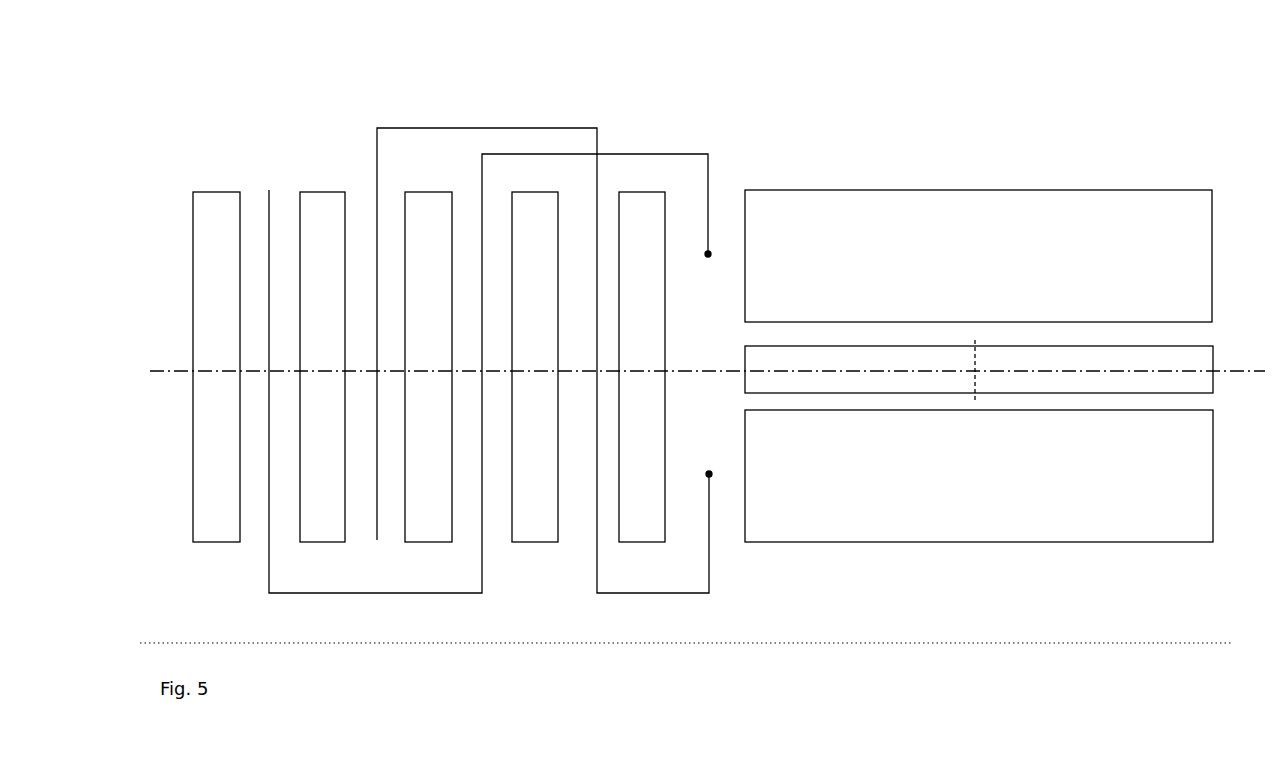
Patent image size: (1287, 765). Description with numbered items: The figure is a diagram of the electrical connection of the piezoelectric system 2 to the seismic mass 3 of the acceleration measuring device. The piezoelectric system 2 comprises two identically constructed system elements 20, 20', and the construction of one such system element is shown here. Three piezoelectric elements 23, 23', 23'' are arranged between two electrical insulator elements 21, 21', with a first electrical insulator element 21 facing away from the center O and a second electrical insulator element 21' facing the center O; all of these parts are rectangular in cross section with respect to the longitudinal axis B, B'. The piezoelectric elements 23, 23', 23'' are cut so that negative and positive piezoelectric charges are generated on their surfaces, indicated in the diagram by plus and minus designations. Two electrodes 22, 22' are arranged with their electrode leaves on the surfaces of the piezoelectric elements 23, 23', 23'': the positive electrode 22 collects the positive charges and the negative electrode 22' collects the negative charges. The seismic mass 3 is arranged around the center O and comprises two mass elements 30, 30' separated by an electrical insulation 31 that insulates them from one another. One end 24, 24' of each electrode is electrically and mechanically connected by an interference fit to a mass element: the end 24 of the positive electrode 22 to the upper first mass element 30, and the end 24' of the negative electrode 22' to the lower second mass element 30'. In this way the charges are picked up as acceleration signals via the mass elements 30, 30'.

The piezoelectric system 2 is at (302, 78).
The system element 20 is at (474, 319).
The system element 20' is at (474, 319).
The electrical insulator element 21 is at (216, 367).
The electrical insulator element 21' is at (642, 367).
The electrode 22 is at (543, 319).
The electrode 22' is at (488, 332).
The piezoelectric element 23 is at (322, 367).
The piezoelectric element 23' is at (428, 367).
The piezoelectric element 23'' is at (535, 367).
The end of the electrode 24 is at (726, 206).
The end of the electrode 24' is at (730, 527).
The seismic mass 3 is at (955, 150).
The mass element 30 is at (978, 256).
The mass element 30' is at (979, 476).
The electrical insulation 31 is at (1200, 357).
The center O is at (975, 371).
The longitudinal axis B is at (163, 417).
The longitudinal axis B' is at (1249, 415).